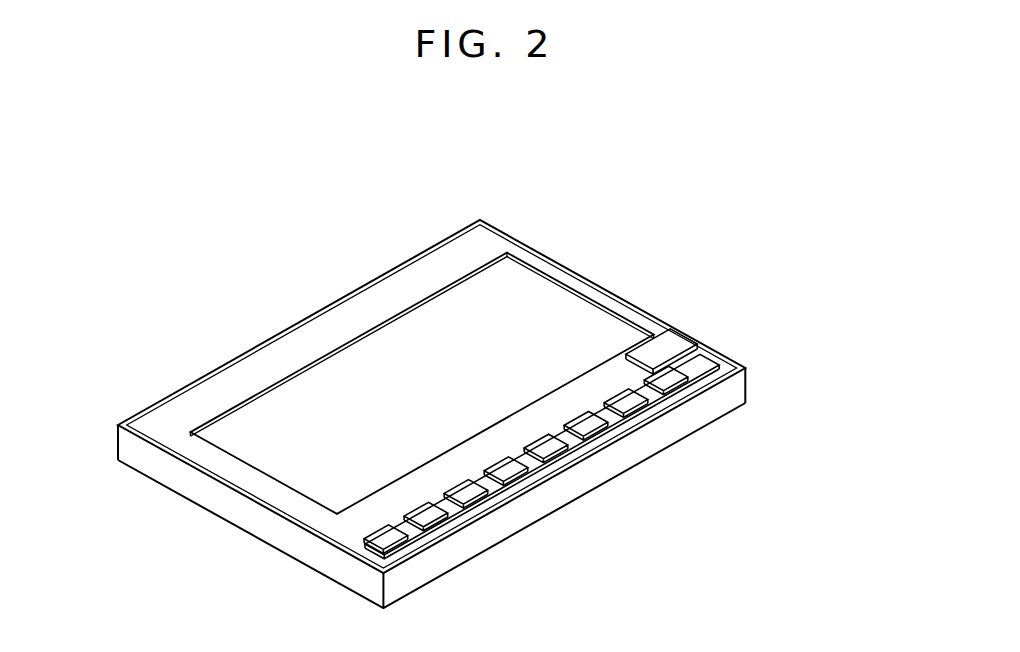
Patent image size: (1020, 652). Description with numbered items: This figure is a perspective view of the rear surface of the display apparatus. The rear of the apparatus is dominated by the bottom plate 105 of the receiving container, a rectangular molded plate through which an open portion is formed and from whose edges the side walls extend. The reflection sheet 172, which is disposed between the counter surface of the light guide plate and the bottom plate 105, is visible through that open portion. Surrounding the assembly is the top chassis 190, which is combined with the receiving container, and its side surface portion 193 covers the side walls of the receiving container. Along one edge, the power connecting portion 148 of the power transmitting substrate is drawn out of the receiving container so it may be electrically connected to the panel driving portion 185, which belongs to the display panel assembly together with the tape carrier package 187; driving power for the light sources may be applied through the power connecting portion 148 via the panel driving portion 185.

The top chassis 190 is at (757, 381).
The side surface portion 193 is at (162, 464).
The bottom plate 105 is at (342, 317).
The reflection sheet 172 is at (613, 333).
The power connecting portion 148 is at (677, 348).
The tape carrier package 187 is at (566, 455).
The panel driving portion 185 is at (681, 390).